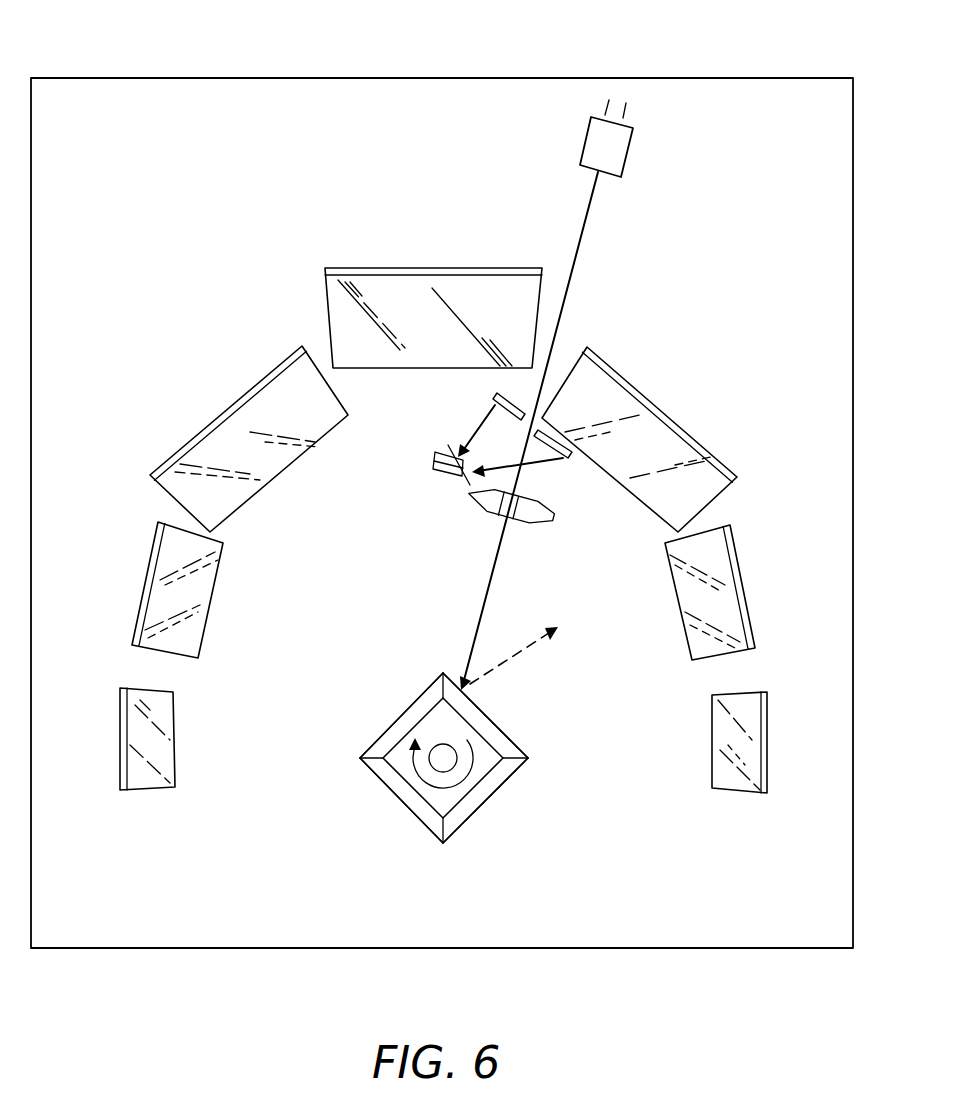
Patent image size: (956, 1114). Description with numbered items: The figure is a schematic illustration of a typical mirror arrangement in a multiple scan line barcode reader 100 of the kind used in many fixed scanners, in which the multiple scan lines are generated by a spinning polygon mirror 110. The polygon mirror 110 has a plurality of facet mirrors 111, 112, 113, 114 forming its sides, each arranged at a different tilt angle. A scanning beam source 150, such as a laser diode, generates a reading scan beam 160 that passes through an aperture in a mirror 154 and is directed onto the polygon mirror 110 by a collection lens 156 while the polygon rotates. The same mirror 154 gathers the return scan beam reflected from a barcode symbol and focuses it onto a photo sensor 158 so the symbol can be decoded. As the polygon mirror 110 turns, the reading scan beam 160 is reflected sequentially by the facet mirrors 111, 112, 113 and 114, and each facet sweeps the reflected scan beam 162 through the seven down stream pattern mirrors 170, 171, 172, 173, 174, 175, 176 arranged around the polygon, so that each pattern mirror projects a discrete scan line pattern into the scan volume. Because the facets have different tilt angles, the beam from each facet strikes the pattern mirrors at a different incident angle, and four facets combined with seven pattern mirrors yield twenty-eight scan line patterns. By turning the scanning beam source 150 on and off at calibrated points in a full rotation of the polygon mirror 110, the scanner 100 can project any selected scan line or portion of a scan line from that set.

The multiple scan line barcode reader 100 is at (632, 66).
The polygon mirror 110 is at (451, 781).
The facet mirror 111 is at (495, 723).
The facet mirror 112 is at (408, 710).
The facet mirror 113 is at (415, 818).
The facet mirror 114 is at (480, 807).
The scanning beam source 150 is at (626, 153).
The mirror 154 is at (572, 457).
The collection lens 156 is at (490, 510).
The photo sensor 158 is at (435, 460).
The reading scan beam 160 is at (581, 253).
The reflected scan beam 162 is at (540, 642).
The down stream pattern mirror 170 is at (133, 792).
The down stream pattern mirror 171 is at (163, 657).
The down stream pattern mirror 172 is at (240, 410).
The down stream pattern mirror 173 is at (390, 273).
The down stream pattern mirror 174 is at (663, 415).
The down stream pattern mirror 175 is at (733, 585).
The down stream pattern mirror 176 is at (732, 795).